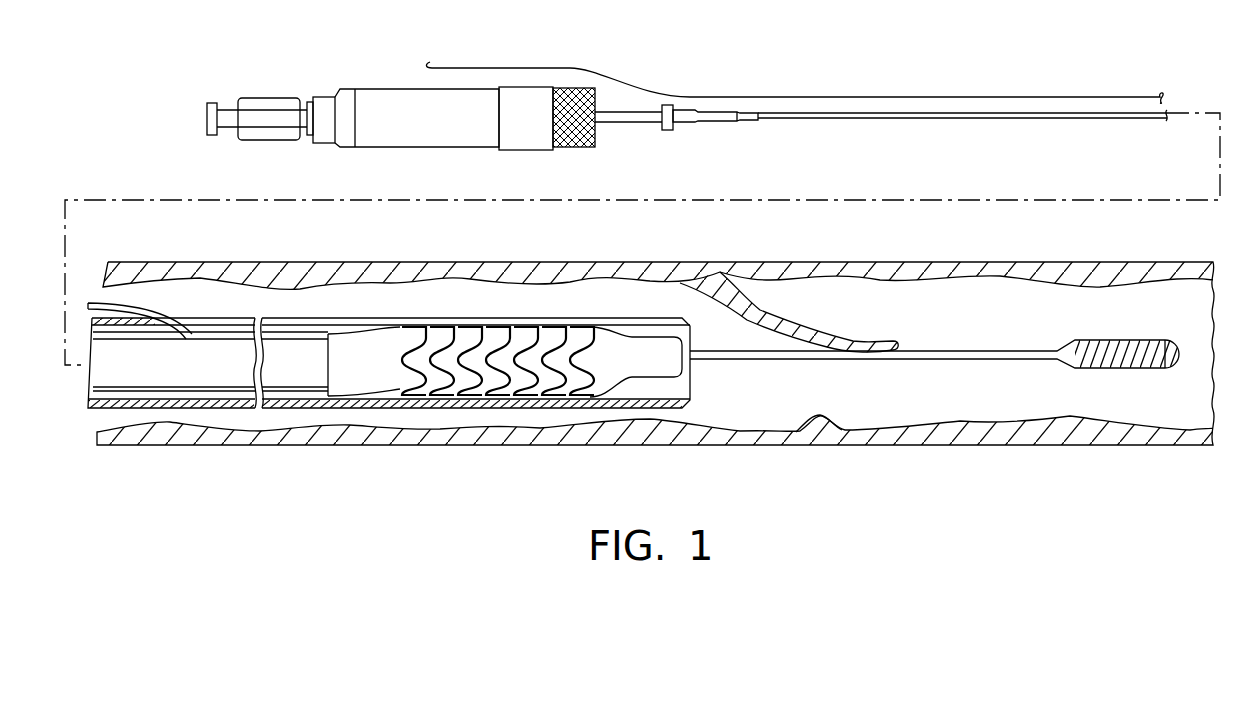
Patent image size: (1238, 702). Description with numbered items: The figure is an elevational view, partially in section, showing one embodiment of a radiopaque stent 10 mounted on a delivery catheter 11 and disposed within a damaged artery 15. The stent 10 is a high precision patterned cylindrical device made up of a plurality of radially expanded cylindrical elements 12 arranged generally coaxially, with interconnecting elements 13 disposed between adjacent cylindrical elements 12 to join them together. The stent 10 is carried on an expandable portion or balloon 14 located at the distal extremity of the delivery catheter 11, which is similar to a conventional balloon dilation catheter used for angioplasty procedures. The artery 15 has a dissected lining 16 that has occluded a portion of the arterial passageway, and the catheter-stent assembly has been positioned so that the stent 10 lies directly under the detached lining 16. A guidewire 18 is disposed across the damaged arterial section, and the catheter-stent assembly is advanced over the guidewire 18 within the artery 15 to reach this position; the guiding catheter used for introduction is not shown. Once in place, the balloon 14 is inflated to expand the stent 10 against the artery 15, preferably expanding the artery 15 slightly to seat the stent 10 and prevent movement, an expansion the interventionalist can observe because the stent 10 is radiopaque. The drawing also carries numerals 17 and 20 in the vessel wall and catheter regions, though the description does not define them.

The radiopaque stent 10 is at (396, 346).
The delivery catheter 11 is at (966, 118).
The radially expanded cylindrical elements 12 is at (498, 300).
The interconnecting elements 13 is at (463, 328).
The balloon 14 is at (348, 372).
The artery 15 is at (803, 432).
The dissected lining 16 is at (780, 330).
The vessel wall 17 is at (953, 447).
The guidewire 18 is at (1000, 348).
The catheter sheath 20 is at (364, 408).